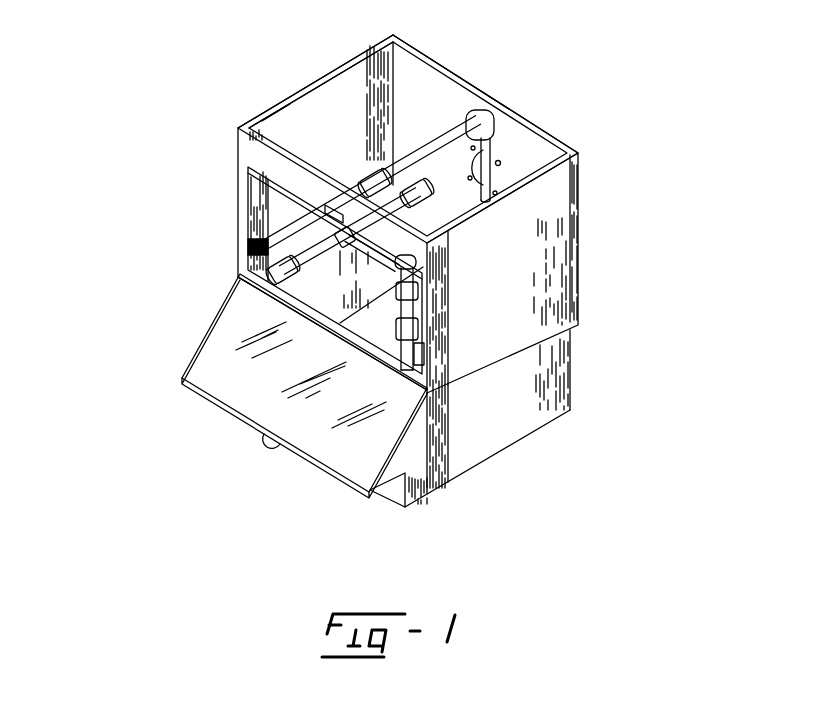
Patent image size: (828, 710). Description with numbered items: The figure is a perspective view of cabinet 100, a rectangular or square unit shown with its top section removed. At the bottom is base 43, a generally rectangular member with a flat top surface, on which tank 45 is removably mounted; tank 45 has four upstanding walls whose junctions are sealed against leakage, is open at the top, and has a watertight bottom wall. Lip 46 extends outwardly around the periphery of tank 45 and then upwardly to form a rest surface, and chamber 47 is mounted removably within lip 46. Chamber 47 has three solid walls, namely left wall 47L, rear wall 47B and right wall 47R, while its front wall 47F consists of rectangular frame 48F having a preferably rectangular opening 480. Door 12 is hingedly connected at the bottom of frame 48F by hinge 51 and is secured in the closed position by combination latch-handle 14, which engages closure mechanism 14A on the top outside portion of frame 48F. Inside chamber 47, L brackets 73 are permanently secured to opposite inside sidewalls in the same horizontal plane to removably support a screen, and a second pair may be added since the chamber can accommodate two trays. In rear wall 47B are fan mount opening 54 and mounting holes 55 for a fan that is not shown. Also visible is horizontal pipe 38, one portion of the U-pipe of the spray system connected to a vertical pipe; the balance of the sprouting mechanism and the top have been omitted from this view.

The cabinet 100 is at (160, 51).
The chamber 47 is at (437, 247).
The left wall of chamber 47L is at (320, 80).
The rear wall of chamber 47B is at (435, 57).
The front wall of chamber 47F is at (243, 145).
The right wall of chamber 47R is at (568, 232).
The opening in frame 480 is at (283, 127).
The horizontal pipe 38 is at (440, 140).
The fan mount opening 54 is at (497, 150).
The mounting holes for fan 55 is at (500, 163).
The L brackets 73 is at (238, 245).
The closure mechanism 14A is at (334, 205).
The door 12 is at (223, 390).
The hinge 51 is at (238, 272).
The combination latch-handle 14 is at (270, 450).
The rectangular frame 48F is at (429, 390).
The lip 46 is at (553, 337).
The tank 45 is at (571, 401).
The base 43 is at (393, 500).